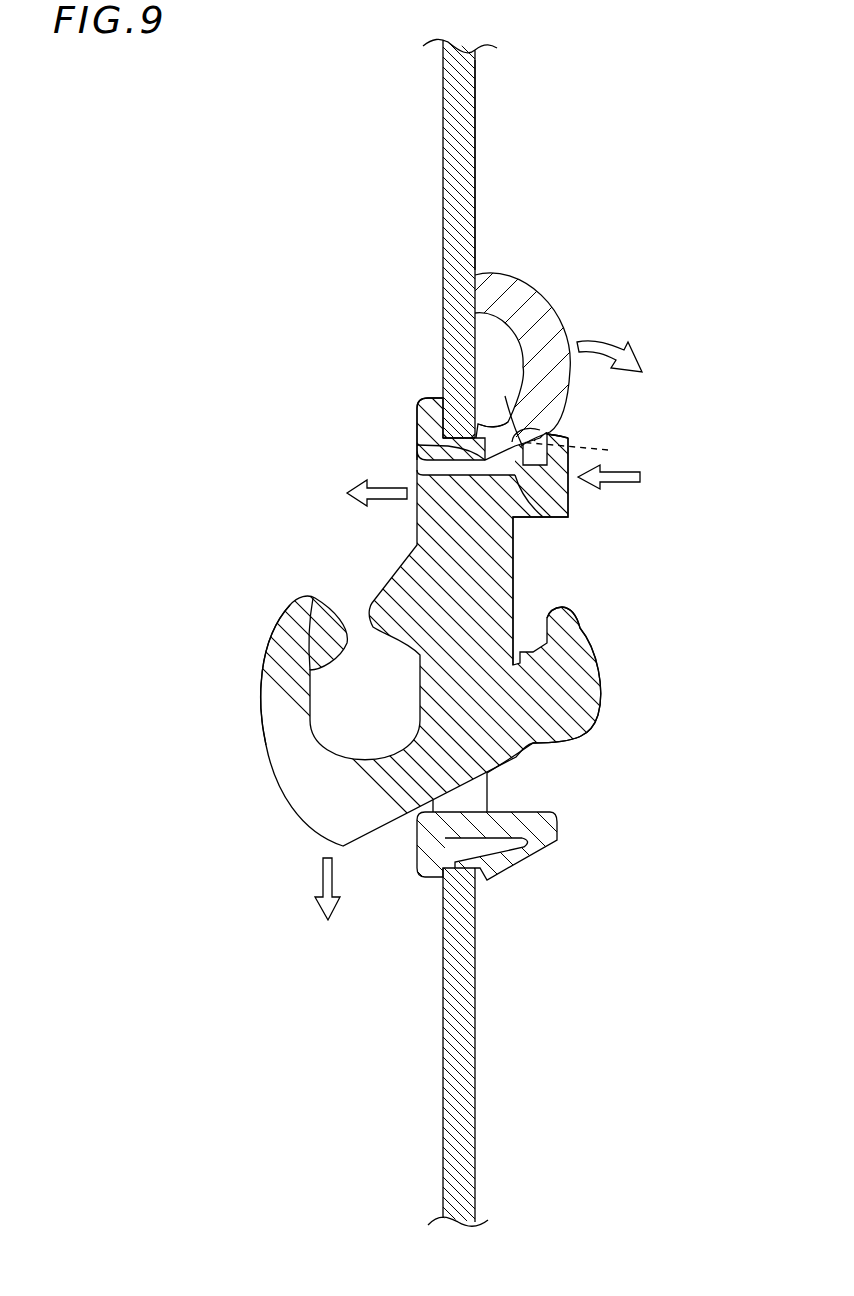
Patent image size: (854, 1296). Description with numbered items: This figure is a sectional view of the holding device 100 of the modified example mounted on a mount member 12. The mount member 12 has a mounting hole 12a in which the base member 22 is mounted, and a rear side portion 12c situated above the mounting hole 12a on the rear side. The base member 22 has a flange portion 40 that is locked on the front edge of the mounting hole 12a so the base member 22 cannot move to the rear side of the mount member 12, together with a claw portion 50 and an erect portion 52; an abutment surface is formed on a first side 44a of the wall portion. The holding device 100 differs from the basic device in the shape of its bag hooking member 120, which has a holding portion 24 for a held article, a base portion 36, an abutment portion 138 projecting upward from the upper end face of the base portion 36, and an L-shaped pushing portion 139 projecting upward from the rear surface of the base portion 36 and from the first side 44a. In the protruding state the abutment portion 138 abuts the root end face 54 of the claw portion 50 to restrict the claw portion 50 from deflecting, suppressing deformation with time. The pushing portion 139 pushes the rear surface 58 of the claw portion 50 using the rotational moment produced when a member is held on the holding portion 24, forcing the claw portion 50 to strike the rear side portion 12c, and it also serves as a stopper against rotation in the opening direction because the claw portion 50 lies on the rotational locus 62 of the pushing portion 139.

The mount member 12 is at (478, 78).
The rear side portion 12c is at (478, 205).
The mounting hole 12a is at (445, 435).
The claw portion 50 is at (553, 322).
The erect portion 52 is at (486, 426).
The root end face 54 is at (541, 431).
The rear surface 58 is at (565, 432).
The pushing portion 139 is at (608, 450).
The flange portion 40 is at (417, 417).
The first side 44a is at (433, 446).
The rotational locus 62 is at (633, 456).
The abutment portion 138 is at (518, 475).
The base portion 36 is at (500, 570).
The holding device 100 is at (266, 630).
The holding portion 24 is at (278, 716).
The bag hooking member 120 is at (600, 709).
The base member 22 is at (550, 844).